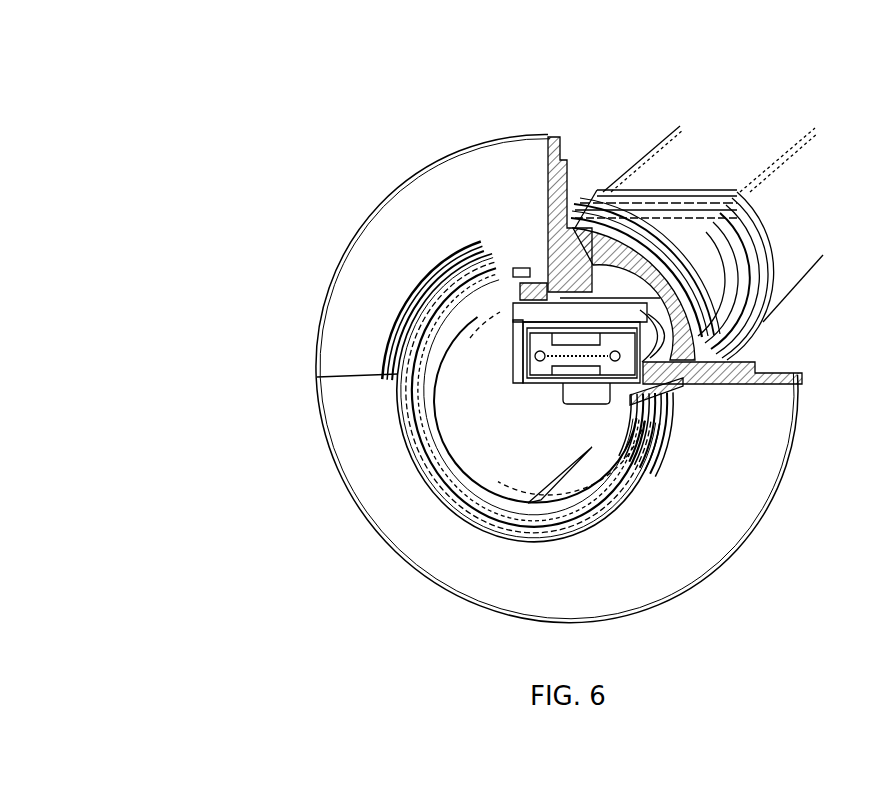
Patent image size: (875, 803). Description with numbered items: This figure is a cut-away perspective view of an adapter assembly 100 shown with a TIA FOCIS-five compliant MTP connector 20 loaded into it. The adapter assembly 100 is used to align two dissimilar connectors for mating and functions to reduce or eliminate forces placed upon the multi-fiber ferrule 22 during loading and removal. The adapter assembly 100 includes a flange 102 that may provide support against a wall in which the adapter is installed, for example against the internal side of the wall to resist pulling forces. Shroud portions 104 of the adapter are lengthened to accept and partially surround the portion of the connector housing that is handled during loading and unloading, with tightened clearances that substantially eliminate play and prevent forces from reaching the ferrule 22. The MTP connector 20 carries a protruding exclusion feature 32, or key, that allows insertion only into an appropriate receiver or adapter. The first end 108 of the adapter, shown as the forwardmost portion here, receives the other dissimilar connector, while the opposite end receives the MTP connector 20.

The adapter assembly 100 is at (472, 82).
The flange 102 is at (402, 532).
The shroud portions 104 is at (692, 228).
The multi-fiber ferrule 22 is at (690, 270).
The MTP connector 20 is at (763, 313).
The exclusion feature 32 is at (592, 403).
The first end 108 is at (400, 432).